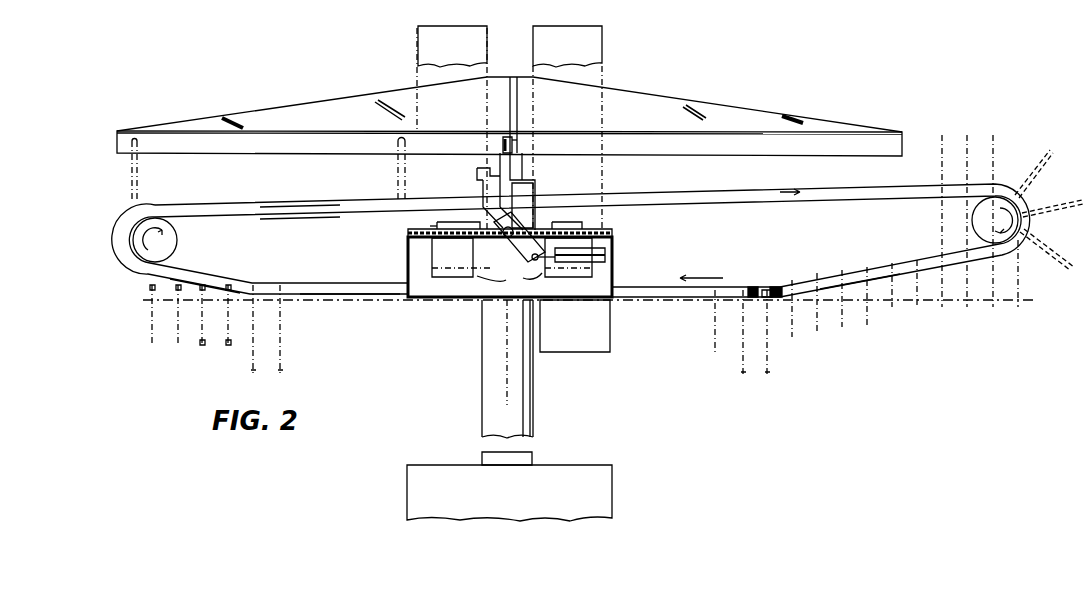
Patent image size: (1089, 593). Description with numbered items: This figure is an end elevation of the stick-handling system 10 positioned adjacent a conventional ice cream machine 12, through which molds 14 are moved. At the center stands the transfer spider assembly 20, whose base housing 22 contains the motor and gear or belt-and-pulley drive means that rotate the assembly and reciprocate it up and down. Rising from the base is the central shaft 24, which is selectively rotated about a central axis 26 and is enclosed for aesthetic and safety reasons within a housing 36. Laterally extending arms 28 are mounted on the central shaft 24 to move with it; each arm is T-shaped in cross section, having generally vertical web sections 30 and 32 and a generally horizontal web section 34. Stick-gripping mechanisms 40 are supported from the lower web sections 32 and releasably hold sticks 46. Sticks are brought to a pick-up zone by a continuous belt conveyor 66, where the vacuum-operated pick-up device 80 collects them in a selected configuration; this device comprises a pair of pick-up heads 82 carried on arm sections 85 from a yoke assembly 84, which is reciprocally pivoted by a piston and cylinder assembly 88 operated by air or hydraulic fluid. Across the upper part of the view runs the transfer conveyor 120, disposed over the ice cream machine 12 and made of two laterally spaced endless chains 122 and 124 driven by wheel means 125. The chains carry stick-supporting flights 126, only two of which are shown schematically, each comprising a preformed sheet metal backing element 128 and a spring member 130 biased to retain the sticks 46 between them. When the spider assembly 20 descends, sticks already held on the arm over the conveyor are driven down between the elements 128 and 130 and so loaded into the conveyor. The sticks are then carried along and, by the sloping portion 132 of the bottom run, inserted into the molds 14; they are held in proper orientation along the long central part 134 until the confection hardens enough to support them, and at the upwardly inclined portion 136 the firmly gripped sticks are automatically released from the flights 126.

The system 10 is at (386, 349).
The ice cream machine 12 is at (872, 311).
The molds 14 is at (282, 374).
The transfer spider assembly 20 is at (482, 397).
The base housing 22 is at (580, 470).
The central shaft 24 is at (522, 163).
The central axis 26 is at (507, 345).
The laterally extending arms 28 is at (391, 92).
The vertically-oriented web section 30 is at (510, 91).
The lower web section 32 is at (517, 143).
The horizontally-extending web section 34 is at (351, 130).
The housing 36 is at (490, 376).
The stick-gripping mechanisms 40 is at (496, 135).
The stick 46 is at (228, 345).
The continuous belt conveyor 66 is at (509, 279).
The pick-up device 80 is at (555, 184).
The pick-up heads 82 is at (499, 173).
The yoke assembly 84 is at (506, 237).
The arm sections 85 is at (505, 199).
The piston and cylinder assembly 88 is at (600, 263).
The transfer conveyor 120 is at (902, 184).
The endless chain 122 is at (270, 214).
The endless chain 124 is at (300, 227).
The wheel means 125 is at (972, 219).
The stick-supporting flights 126 is at (767, 288).
The sheet metal backing element 128 is at (777, 288).
The spring member 130 is at (753, 289).
The sloping portion 132 is at (866, 275).
The central part 134 is at (368, 296).
The upwardly inclined portion 136 is at (193, 276).